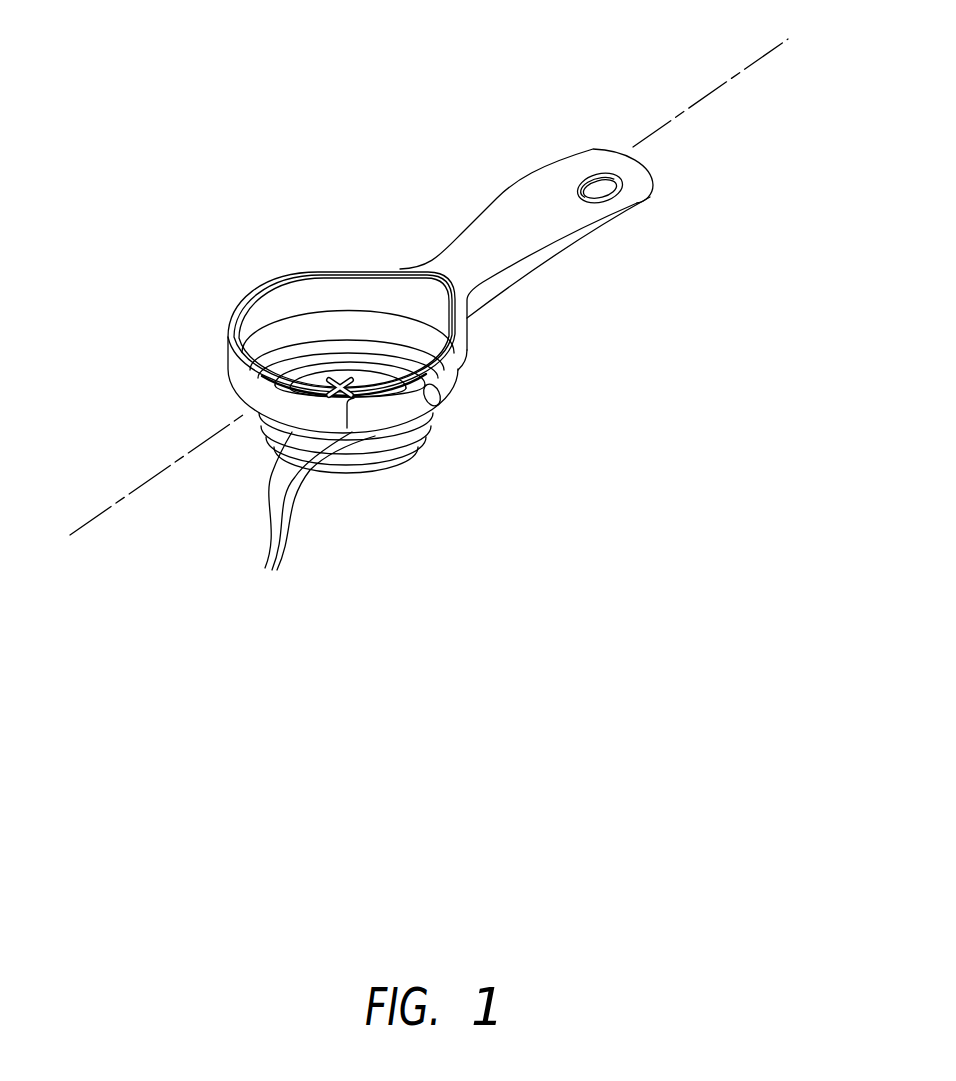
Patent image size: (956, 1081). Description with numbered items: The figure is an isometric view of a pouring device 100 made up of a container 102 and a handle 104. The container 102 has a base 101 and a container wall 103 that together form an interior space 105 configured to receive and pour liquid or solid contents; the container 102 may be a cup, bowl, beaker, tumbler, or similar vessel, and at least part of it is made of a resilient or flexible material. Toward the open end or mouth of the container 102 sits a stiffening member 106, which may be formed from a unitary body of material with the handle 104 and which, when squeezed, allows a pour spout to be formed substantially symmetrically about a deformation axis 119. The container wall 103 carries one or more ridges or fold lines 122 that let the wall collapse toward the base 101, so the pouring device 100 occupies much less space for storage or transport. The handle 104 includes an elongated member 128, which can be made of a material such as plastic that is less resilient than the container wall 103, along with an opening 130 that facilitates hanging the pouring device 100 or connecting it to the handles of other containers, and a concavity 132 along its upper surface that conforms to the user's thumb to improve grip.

The pouring device 100 is at (218, 162).
The base 101 is at (330, 508).
The container 102 is at (268, 445).
The container wall 103 is at (377, 443).
The handle 104 is at (584, 185).
The interior space 105 is at (339, 322).
The stiffening member 106 is at (240, 312).
The deformation axis 119 is at (157, 477).
The ridges or fold lines 122 is at (343, 475).
The elongated member 128 is at (590, 225).
The opening 130 is at (598, 190).
The concavity 132 is at (553, 197).